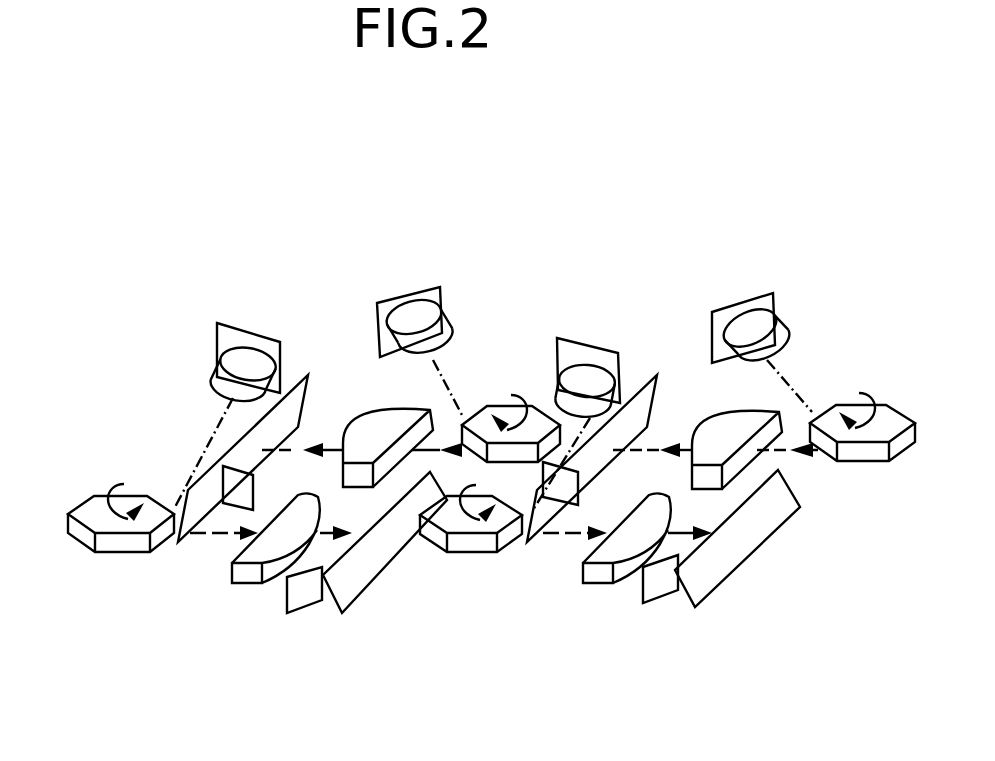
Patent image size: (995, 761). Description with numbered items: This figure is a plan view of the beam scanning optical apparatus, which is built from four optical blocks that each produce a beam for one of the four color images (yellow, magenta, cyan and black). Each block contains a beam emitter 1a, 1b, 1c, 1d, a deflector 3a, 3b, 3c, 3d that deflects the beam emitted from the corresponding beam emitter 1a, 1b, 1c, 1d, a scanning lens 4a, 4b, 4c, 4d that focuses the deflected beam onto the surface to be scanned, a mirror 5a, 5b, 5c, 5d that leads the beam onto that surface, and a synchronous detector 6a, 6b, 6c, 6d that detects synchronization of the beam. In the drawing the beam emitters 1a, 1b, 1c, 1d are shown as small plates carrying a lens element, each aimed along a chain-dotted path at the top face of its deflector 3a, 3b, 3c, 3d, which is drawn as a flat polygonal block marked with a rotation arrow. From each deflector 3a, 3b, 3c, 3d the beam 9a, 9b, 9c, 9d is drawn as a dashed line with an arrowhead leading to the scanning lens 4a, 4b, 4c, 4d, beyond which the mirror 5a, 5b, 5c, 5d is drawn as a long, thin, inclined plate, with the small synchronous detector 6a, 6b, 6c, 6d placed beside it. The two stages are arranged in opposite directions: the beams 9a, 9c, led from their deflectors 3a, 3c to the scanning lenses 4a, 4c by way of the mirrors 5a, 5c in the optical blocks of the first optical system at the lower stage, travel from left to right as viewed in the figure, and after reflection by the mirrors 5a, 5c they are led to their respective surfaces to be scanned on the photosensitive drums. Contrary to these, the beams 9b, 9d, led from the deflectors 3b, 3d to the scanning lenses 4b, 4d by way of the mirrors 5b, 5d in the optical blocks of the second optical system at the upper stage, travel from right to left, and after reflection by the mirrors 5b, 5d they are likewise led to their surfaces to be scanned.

The beam emitter 1a is at (250, 342).
The beam emitter 1b is at (388, 297).
The beam emitter 1c is at (587, 377).
The beam emitter 1d is at (748, 323).
The deflector 3a is at (90, 507).
The deflector 3b is at (500, 403).
The deflector 3c is at (467, 540).
The deflector 3d is at (870, 433).
The scanning lens 4a is at (256, 551).
The scanning lens 4b is at (362, 437).
The scanning lens 4c is at (610, 548).
The scanning lens 4d is at (704, 420).
The mirror 5a is at (370, 565).
The mirror 5b is at (303, 387).
The mirror 5c is at (748, 540).
The mirror 5d is at (647, 383).
The synchronous detector 6a is at (297, 597).
The synchronous detector 6b is at (230, 483).
The synchronous detector 6c is at (662, 587).
The synchronous detector 6d is at (555, 485).
The beam 9a is at (207, 533).
The beam 9b is at (457, 370).
The beam 9c is at (572, 535).
The beam 9d is at (783, 378).